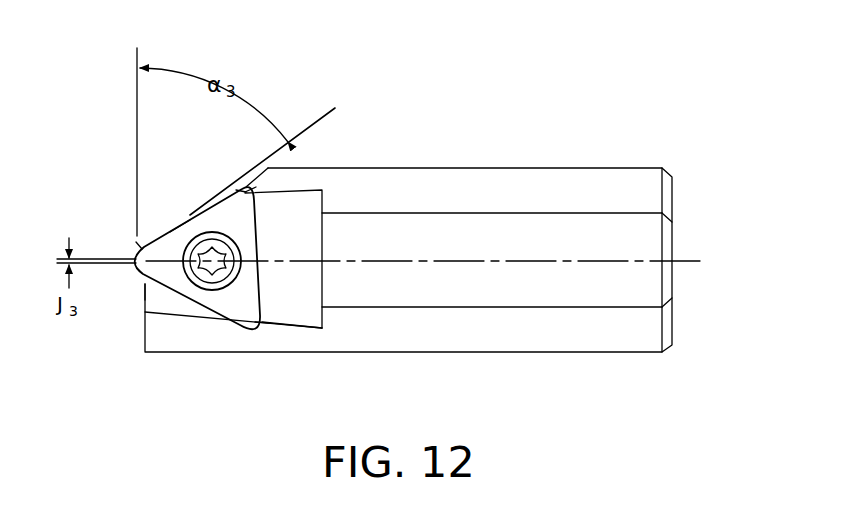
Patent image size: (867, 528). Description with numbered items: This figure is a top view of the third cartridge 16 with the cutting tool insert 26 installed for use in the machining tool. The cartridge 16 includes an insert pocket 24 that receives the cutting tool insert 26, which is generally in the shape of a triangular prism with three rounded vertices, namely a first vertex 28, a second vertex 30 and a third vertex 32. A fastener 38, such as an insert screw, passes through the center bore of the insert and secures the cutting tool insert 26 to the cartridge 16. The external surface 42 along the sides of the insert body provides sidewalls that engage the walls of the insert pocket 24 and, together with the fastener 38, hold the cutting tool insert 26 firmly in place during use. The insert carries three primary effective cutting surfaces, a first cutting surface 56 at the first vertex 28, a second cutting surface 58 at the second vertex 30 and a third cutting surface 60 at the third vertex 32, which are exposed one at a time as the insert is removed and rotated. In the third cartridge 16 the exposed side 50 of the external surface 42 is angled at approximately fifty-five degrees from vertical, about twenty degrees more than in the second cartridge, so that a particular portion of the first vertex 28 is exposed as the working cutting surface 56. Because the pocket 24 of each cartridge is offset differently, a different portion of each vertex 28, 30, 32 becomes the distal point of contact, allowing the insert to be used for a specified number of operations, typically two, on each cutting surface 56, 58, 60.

The third cartridge 16 is at (543, 243).
The insert pocket 24 is at (258, 231).
The cutting tool insert 26 is at (245, 222).
The first vertex 28 is at (142, 282).
The second vertex 30 is at (246, 192).
The third vertex 32 is at (262, 322).
The fastener 38 is at (213, 280).
The external surface 42 is at (180, 213).
The exposed side 50 is at (136, 243).
The first primary effective cutting surface 56 is at (134, 270).
The second primary effective cutting surface 58 is at (237, 187).
The third primary effective cutting surface 60 is at (272, 318).